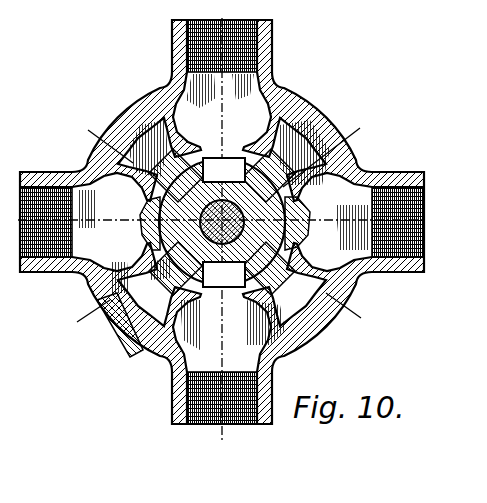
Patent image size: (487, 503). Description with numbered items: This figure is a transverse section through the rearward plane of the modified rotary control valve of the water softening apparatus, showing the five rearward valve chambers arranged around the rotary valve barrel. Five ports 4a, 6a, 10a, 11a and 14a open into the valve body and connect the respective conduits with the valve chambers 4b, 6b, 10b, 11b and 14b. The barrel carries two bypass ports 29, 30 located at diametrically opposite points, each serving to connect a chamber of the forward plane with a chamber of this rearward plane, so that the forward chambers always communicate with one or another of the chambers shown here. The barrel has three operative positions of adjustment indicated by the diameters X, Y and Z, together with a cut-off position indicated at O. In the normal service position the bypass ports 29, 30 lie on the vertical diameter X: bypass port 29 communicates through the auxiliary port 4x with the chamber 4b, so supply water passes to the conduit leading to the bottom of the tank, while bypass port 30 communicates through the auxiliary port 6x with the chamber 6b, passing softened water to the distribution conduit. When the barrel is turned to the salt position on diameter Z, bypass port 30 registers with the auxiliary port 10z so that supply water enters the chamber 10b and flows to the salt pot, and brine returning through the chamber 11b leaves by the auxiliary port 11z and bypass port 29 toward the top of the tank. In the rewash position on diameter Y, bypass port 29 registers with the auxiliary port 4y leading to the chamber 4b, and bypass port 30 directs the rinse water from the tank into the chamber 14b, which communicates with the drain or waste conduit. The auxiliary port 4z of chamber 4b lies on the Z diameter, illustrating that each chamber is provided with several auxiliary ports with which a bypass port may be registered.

The diameter x—x X is at (219, 231).
The cut-off position o—o O is at (218, 224).
The diameter y—y Y is at (225, 223).
The diameter z—z Z is at (213, 225).
The port 6a is at (236, 40).
The valve chamber 6b is at (201, 100).
The auxiliary port 6x is at (232, 147).
The bypass port 30 is at (224, 170).
The bypass port 29 is at (224, 274).
The port 10a is at (400, 200).
The valve chamber 10b is at (340, 222).
The auxiliary port 10z is at (280, 187).
The port 14a is at (43, 267).
The valve chamber 14b is at (97, 209).
The auxiliary port 4z is at (172, 175).
The auxiliary port 4x is at (220, 290).
The port 4a is at (200, 425).
The valve chamber 4b is at (265, 322).
The auxiliary port 4y is at (286, 267).
The port 11a is at (117, 323).
The valve chamber 11b is at (134, 283).
The auxiliary port 11z is at (167, 263).